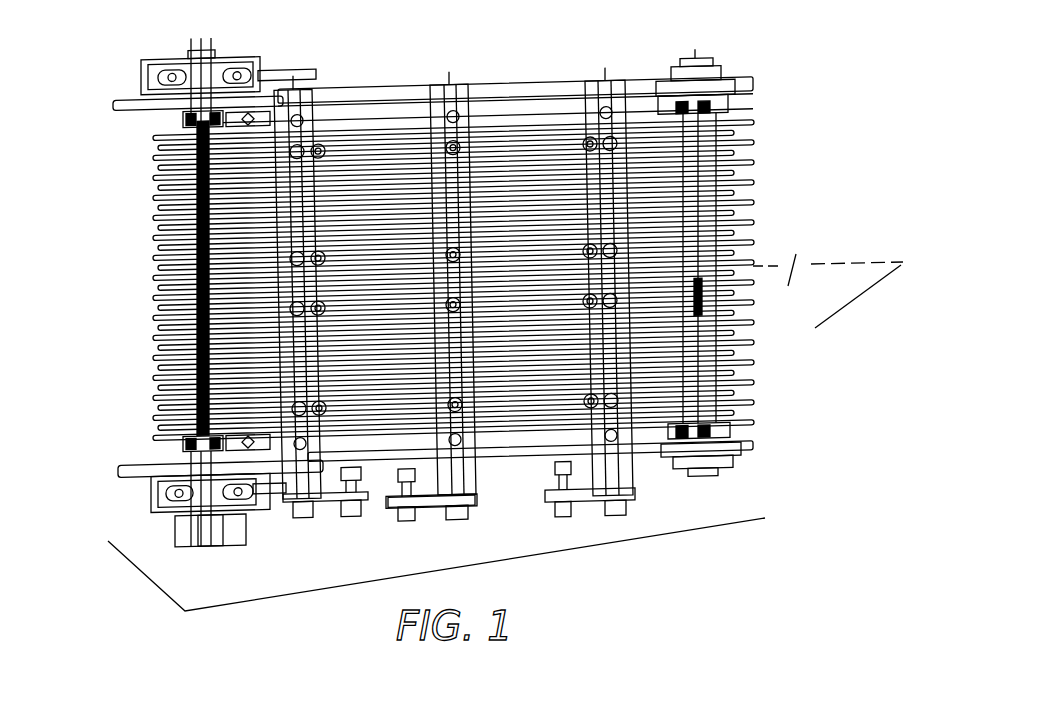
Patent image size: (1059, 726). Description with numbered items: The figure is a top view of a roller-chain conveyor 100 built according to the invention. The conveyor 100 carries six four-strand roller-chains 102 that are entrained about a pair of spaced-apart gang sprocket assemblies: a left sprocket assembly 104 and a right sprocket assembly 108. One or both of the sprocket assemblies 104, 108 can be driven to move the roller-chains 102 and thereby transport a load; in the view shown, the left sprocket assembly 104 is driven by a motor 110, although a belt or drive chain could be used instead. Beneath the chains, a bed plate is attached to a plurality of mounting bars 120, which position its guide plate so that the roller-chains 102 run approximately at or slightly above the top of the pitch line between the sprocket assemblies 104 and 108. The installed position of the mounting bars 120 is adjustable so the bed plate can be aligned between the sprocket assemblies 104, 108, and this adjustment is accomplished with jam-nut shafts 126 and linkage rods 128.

The roller-chain conveyor 100 is at (478, 323).
The roller-chain 102 is at (133, 160).
The left gang sprocket assembly 104 is at (146, 437).
The right gang sprocket assembly 108 is at (755, 433).
The motor 110 is at (190, 536).
The mounting bar 120 is at (304, 469).
The jam-nut shaft 126 is at (386, 526).
The linkage rod 128 is at (424, 503).